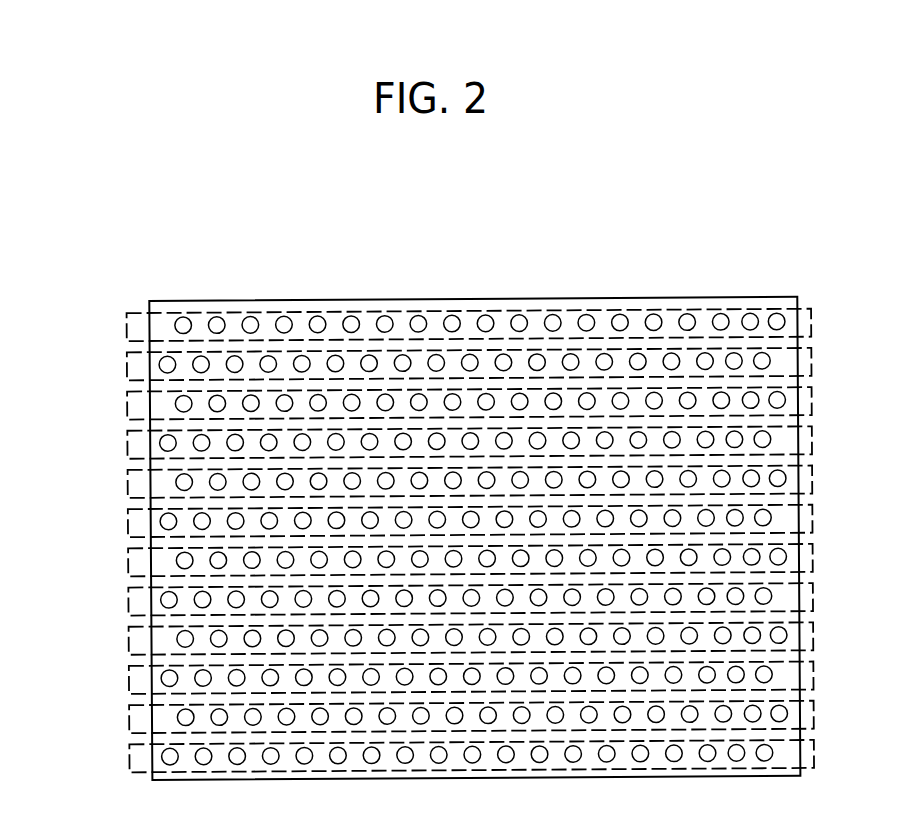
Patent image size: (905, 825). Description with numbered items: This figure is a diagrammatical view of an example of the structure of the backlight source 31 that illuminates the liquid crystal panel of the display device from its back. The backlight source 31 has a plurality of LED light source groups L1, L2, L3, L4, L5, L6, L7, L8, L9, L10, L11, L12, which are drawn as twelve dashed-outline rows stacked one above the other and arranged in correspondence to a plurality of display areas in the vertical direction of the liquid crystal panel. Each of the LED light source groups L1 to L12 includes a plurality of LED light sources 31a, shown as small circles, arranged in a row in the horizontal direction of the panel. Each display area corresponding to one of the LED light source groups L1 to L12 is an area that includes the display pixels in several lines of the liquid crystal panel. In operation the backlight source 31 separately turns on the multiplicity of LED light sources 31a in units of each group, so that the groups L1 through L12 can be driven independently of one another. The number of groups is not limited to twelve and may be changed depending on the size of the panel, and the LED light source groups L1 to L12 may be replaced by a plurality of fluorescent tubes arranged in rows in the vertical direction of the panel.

The backlight source 31 is at (167, 300).
The LED light source 31a is at (516, 318).
The LED light source group L1 is at (122, 328).
The LED light source group L2 is at (122, 367).
The LED light source group L3 is at (122, 406).
The LED light source group L4 is at (122, 445).
The LED light source group L5 is at (122, 484).
The LED light source group L6 is at (122, 524).
The LED light source group L7 is at (122, 563).
The LED light source group L8 is at (122, 602).
The LED light source group L9 is at (122, 641).
The LED light source group L10 is at (122, 680).
The LED light source group L11 is at (122, 720).
The LED light source group L12 is at (122, 759).